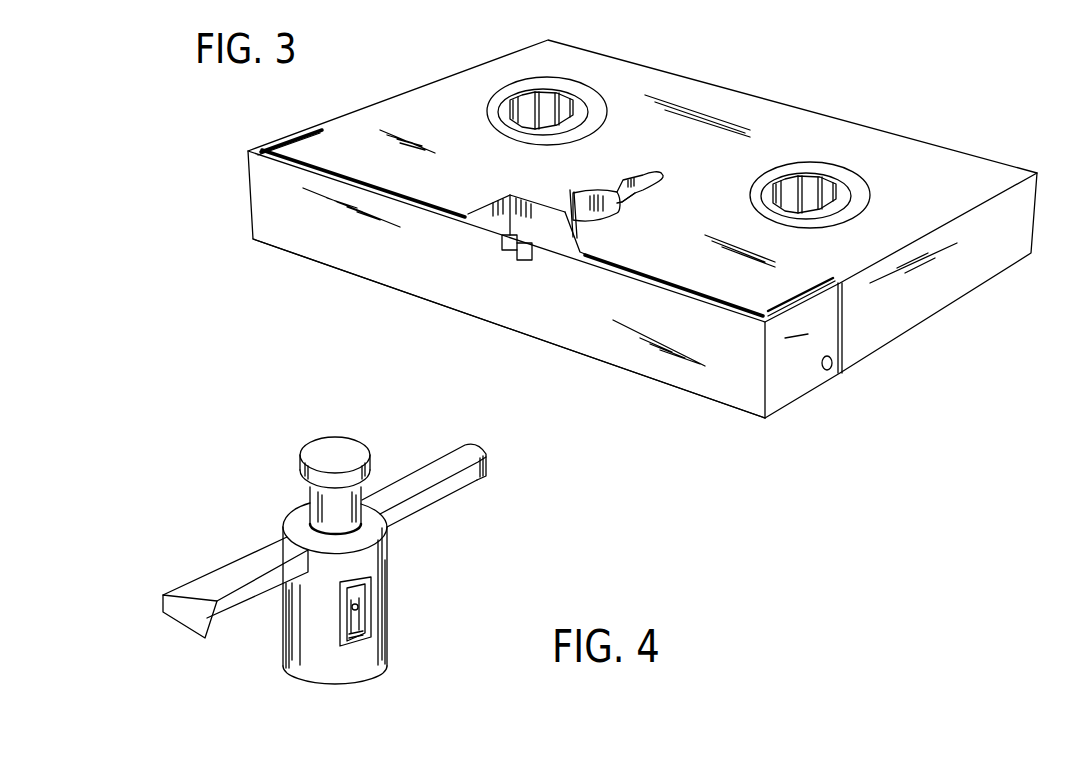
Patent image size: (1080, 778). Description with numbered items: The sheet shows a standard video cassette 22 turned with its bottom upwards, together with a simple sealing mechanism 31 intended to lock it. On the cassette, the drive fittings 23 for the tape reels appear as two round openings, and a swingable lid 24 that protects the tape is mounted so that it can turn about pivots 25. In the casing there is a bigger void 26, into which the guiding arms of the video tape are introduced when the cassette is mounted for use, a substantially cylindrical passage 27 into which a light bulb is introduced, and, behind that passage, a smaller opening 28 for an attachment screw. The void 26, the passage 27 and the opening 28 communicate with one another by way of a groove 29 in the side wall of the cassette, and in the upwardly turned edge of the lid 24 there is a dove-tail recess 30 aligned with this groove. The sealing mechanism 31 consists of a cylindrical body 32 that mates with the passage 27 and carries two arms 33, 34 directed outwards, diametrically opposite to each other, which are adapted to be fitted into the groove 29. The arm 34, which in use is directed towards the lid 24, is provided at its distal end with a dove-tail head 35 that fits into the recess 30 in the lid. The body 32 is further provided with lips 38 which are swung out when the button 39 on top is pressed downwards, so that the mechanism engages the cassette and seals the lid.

In FIG. 3, the video cassette 22 is at (742, 88).
In FIG. 3, the drive fittings 23 is at (547, 108).
In FIG. 3, the swingable lid 24 is at (625, 358).
In FIG. 3, the pivots 25 is at (829, 371).
In FIG. 3, the void 26 is at (488, 214).
In FIG. 3, the cylindrical passage 27 is at (582, 191).
In FIG. 3, the opening 28 is at (664, 181).
In FIG. 3, the groove 29 is at (572, 200).
In FIG. 3, the dove-tail recess 30 is at (520, 251).
In FIG. 4, the sealing mechanism 31 is at (318, 544).
In FIG. 4, the cylindrical body 32 is at (385, 611).
In FIG. 4, the arm 33 is at (443, 487).
In FIG. 4, the arm 34 is at (205, 619).
In FIG. 4, the dove-tail head 35 is at (182, 618).
In FIG. 4, the lips 38 is at (352, 645).
In FIG. 4, the button 39 is at (338, 507).